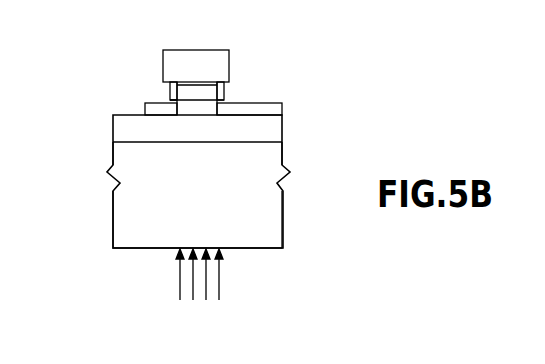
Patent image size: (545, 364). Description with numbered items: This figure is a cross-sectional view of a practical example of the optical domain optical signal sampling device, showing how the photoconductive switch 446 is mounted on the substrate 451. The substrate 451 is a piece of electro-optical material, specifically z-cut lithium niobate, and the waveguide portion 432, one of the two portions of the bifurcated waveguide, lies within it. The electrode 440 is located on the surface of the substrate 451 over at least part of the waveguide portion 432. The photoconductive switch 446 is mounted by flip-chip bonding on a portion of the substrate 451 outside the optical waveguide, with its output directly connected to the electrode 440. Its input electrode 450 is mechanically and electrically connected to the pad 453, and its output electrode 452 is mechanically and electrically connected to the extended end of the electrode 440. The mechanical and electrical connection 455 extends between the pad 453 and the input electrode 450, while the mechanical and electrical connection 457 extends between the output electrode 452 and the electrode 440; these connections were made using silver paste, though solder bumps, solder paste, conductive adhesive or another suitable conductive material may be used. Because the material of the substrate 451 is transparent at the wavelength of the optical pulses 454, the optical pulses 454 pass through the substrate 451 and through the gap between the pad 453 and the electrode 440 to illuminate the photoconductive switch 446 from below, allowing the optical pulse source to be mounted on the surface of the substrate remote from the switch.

The electrode 440 is at (283, 107).
The waveguide portion 432 is at (283, 128).
The substrate 451 is at (113, 157).
The pad 453 is at (144, 104).
The mechanical and electrical connection 457 is at (228, 98).
The photoconductive switch 446 is at (166, 49).
The input electrode 450 is at (168, 92).
The output electrode 452 is at (228, 88).
The mechanical and electrical connection 455 is at (168, 100).
The optical pulses 454 is at (179, 278).